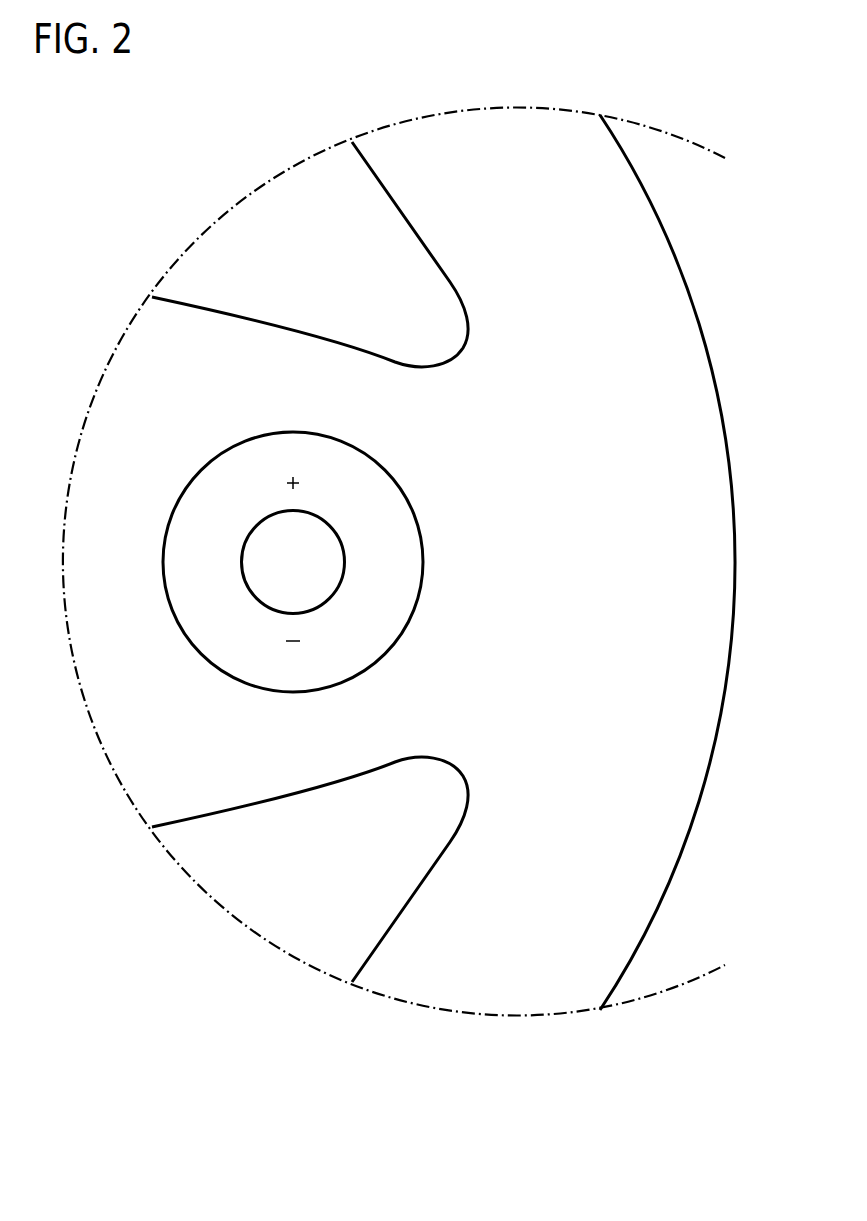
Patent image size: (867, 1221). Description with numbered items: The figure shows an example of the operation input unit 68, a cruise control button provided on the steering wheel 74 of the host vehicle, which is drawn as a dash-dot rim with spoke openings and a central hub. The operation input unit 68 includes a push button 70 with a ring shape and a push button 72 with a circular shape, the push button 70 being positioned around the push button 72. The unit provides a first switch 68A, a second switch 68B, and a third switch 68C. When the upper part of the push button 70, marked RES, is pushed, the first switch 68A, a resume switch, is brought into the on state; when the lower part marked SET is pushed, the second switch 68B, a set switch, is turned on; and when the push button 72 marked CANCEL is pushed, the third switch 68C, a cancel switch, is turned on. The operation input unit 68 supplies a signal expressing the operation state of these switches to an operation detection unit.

The steering wheel 74 is at (108, 320).
The operation input unit 68 is at (358, 433).
The push button 70 is at (418, 522).
The push button 72 is at (327, 520).
The first switch 68A is at (267, 470).
The second switch 68B is at (268, 653).
The third switch 68C is at (248, 558).